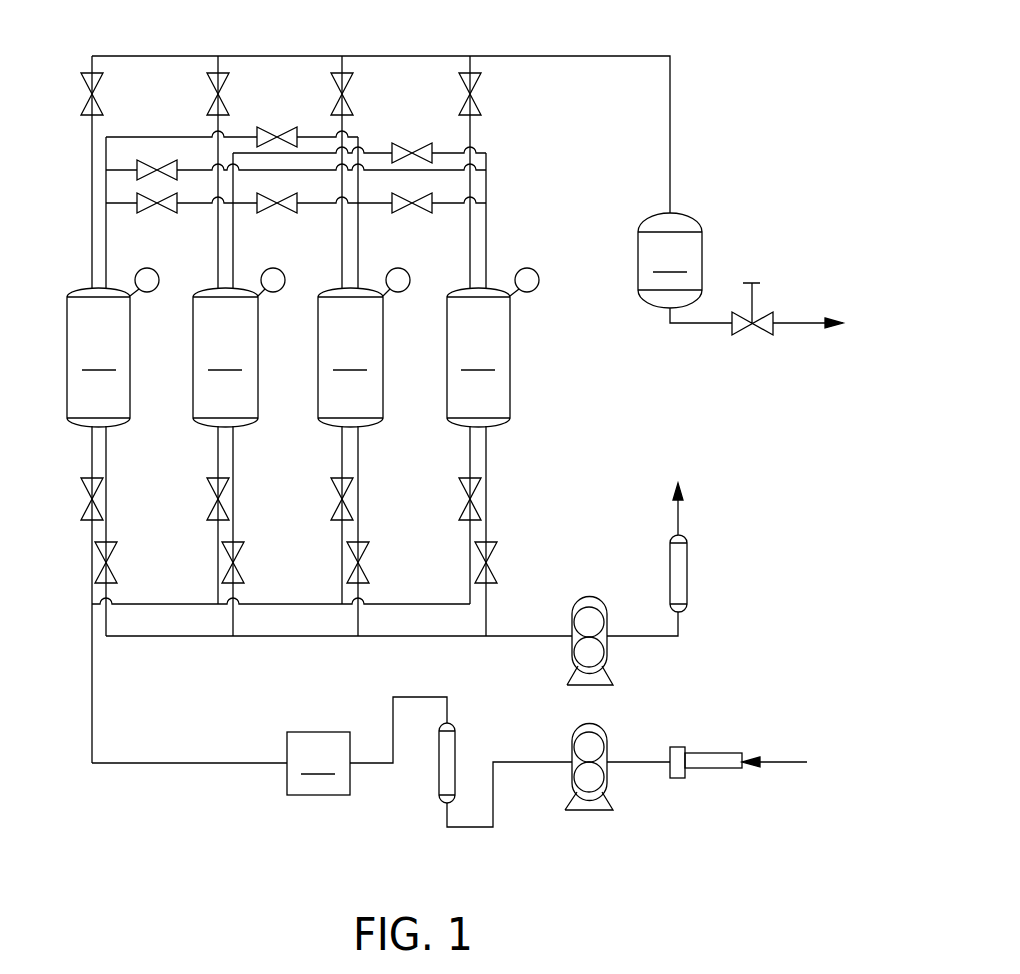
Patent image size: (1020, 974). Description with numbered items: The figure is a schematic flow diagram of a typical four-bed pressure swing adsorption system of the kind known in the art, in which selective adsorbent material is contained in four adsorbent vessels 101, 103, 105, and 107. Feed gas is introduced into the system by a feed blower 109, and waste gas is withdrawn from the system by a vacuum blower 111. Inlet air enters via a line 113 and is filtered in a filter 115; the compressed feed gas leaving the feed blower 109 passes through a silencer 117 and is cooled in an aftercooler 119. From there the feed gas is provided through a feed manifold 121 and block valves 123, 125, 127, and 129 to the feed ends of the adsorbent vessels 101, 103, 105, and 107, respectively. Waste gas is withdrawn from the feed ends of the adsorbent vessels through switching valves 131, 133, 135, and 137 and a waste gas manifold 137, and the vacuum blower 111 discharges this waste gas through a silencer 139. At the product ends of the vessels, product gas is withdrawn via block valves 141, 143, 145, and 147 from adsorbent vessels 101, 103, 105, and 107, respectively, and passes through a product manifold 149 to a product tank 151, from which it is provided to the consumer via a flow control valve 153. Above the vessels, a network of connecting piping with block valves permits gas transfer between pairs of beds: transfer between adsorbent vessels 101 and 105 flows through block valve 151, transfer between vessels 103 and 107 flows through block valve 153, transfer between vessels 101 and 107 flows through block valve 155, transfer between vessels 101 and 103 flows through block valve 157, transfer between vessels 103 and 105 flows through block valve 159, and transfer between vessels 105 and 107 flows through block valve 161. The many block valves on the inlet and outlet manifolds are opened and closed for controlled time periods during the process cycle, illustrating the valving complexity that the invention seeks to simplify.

The adsorbent vessel 101 is at (113, 347).
The adsorbent vessel 103 is at (239, 347).
The adsorbent vessel 105 is at (364, 347).
The adsorbent vessel 107 is at (493, 347).
The feed blower 109 is at (592, 723).
The vacuum blower 111 is at (588, 597).
The line 113 is at (776, 760).
The filter 115 is at (708, 772).
The silencer 117 is at (437, 778).
The aftercooler 119 is at (318, 763).
The feed manifold 121 is at (292, 607).
The block valve 123 is at (82, 487).
The block valve 125 is at (208, 488).
The block valve 127 is at (332, 492).
The block valve 129 is at (461, 490).
The switching valve 131 is at (108, 562).
The switching valve 133 is at (235, 562).
The switching valve 135 is at (360, 562).
The switching valve / waste gas manifold 137 is at (488, 562).
The silencer 139 is at (688, 574).
The block valve 141 is at (80, 79).
The block valve 143 is at (206, 90).
The block valve 145 is at (331, 90).
The block valve 147 is at (481, 100).
The product manifold 149 is at (390, 56).
The product tank / block valve 151 is at (287, 100).
The flow control valve / block valve 153 is at (420, 143).
The block valve 155 is at (167, 162).
The block valve 157 is at (152, 211).
The block valve 159 is at (270, 211).
The block valve 161 is at (398, 211).